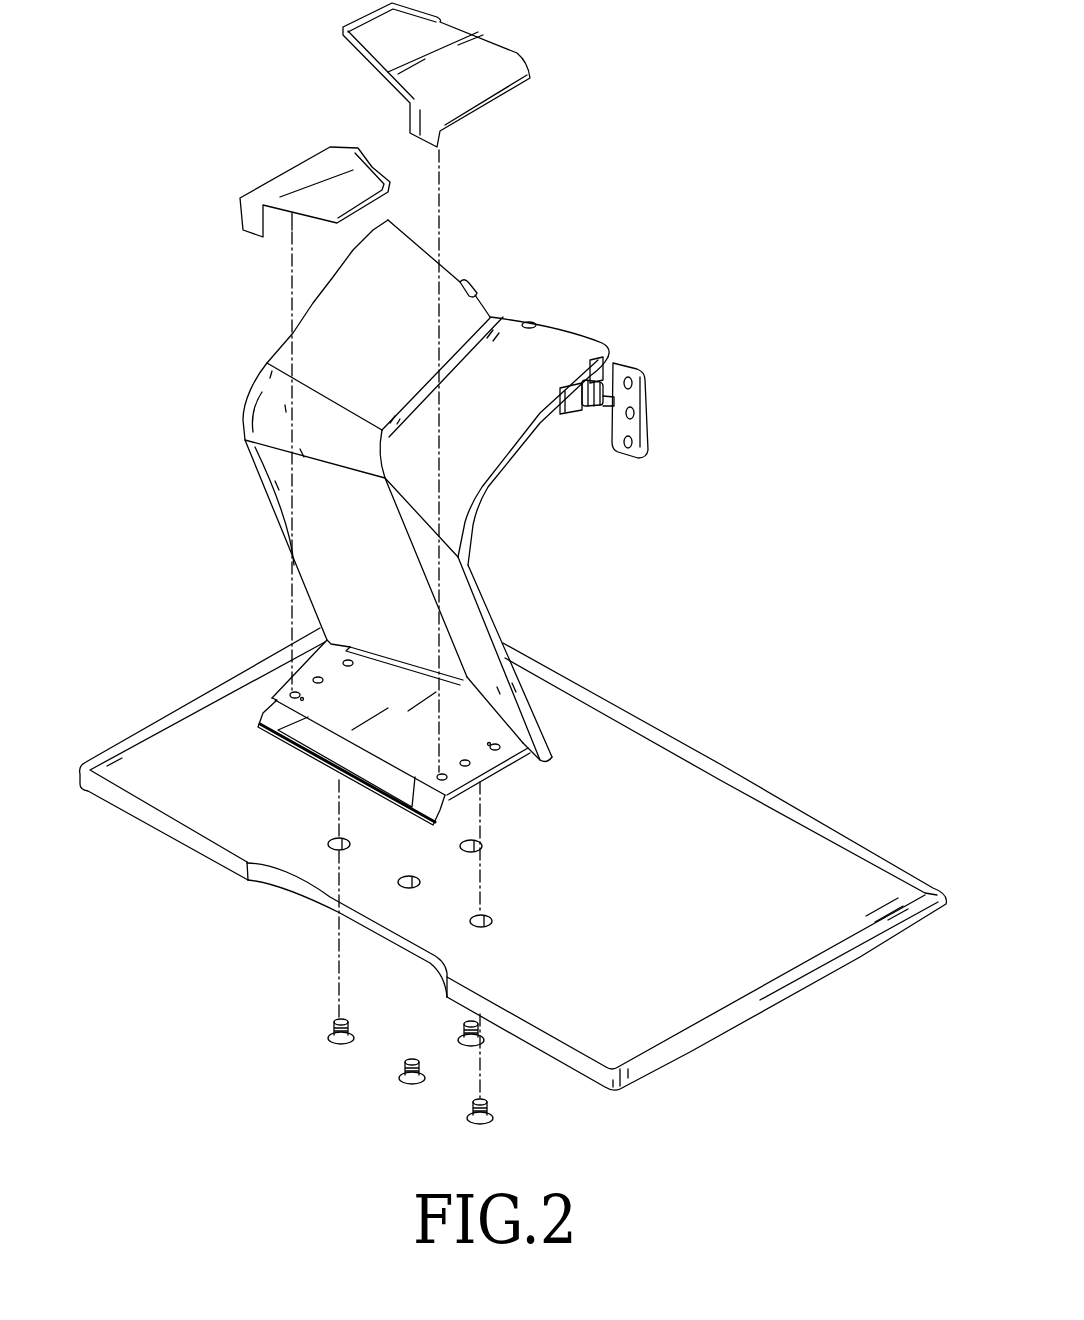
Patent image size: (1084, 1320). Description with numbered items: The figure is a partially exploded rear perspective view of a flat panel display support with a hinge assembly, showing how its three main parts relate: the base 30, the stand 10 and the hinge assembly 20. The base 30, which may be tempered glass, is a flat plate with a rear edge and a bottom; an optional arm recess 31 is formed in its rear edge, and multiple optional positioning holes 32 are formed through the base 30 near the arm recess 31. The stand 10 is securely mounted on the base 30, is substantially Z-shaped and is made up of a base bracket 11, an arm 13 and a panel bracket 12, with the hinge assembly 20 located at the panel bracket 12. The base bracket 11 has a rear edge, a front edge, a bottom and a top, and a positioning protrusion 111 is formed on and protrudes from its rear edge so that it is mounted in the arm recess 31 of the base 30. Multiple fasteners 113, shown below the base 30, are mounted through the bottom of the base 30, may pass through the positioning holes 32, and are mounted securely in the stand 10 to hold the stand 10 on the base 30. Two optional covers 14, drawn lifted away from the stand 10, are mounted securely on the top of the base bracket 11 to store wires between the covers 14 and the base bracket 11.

The stand 10 is at (383, 522).
The base bracket 11 is at (488, 754).
The positioning protrusion 111 is at (279, 726).
The fasteners 113 is at (334, 1030).
The panel bracket 12 is at (553, 340).
The arm 13 is at (476, 633).
The covers 14 is at (512, 70).
The hinge assembly 20 is at (654, 367).
The base 30 is at (221, 691).
The arm recess 31 is at (319, 894).
The positioning holes 32 is at (331, 842).